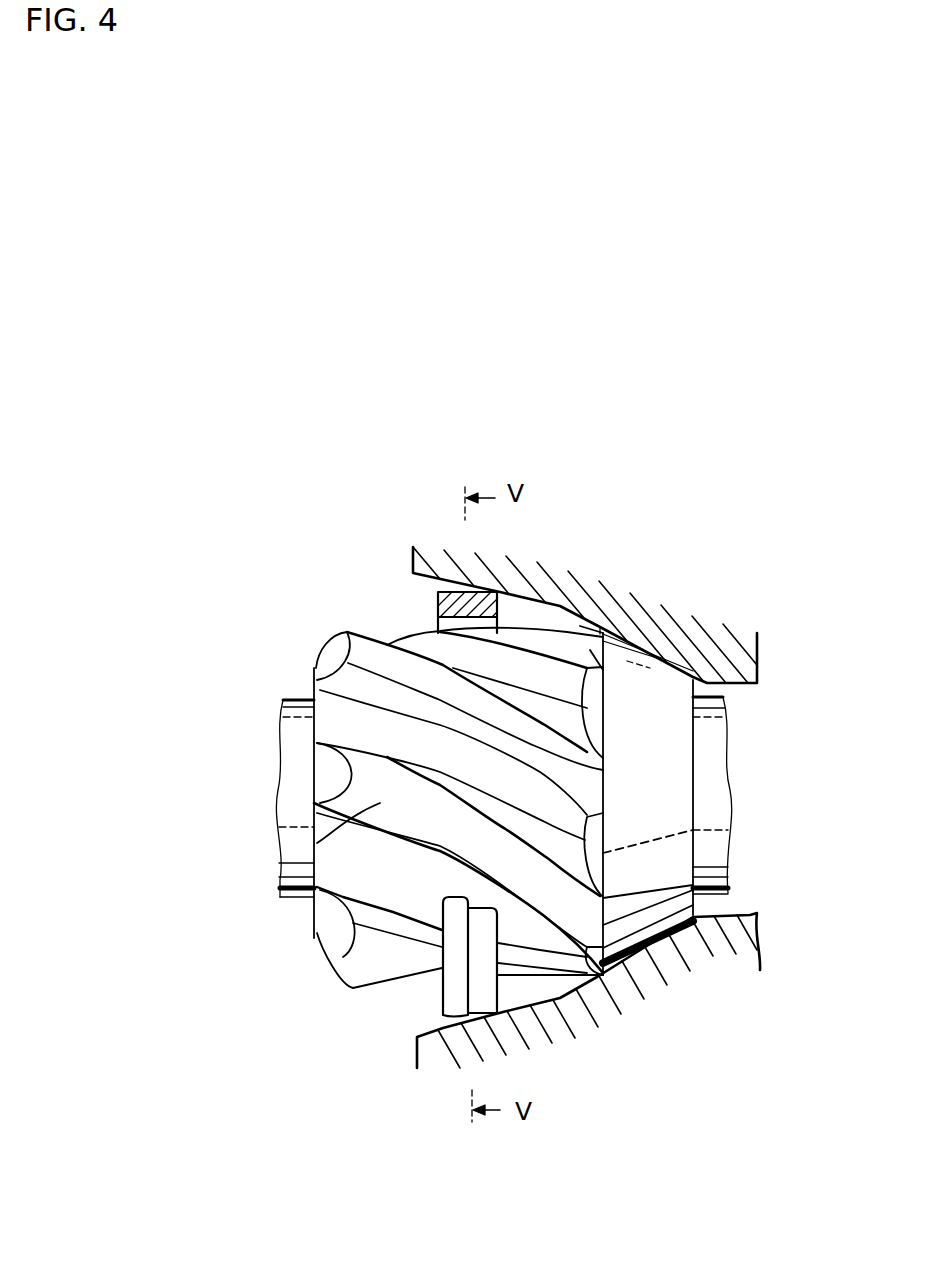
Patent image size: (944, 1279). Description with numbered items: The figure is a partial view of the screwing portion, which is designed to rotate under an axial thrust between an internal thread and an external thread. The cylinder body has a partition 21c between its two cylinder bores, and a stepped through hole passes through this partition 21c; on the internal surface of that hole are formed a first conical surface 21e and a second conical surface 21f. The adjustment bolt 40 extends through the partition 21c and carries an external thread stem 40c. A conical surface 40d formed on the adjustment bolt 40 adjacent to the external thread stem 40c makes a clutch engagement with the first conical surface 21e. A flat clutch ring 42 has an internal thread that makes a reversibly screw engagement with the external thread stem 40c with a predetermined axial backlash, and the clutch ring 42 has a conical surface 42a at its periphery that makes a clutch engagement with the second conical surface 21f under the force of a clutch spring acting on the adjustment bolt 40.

The partition 21c is at (533, 580).
The first conical surface 21e is at (672, 663).
The second conical surface 21f is at (420, 585).
The adjustment bolt 40 is at (275, 928).
The external thread stem 40c is at (313, 842).
The conical surface 40d is at (673, 760).
The flat clutch ring 42 is at (402, 1026).
The conical surface 42a is at (483, 1010).